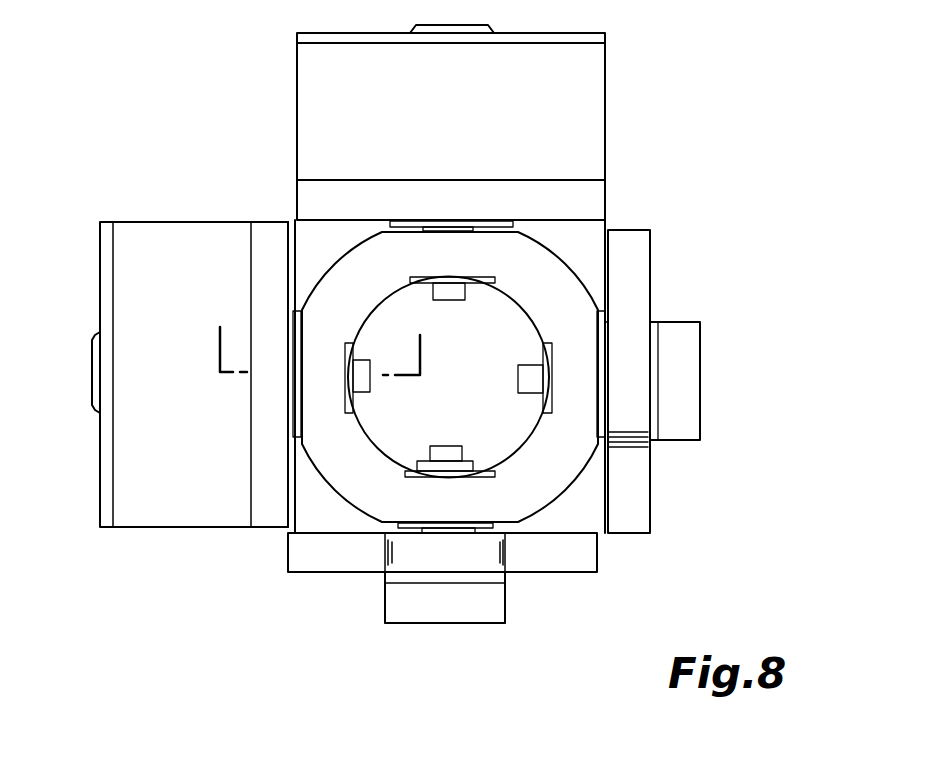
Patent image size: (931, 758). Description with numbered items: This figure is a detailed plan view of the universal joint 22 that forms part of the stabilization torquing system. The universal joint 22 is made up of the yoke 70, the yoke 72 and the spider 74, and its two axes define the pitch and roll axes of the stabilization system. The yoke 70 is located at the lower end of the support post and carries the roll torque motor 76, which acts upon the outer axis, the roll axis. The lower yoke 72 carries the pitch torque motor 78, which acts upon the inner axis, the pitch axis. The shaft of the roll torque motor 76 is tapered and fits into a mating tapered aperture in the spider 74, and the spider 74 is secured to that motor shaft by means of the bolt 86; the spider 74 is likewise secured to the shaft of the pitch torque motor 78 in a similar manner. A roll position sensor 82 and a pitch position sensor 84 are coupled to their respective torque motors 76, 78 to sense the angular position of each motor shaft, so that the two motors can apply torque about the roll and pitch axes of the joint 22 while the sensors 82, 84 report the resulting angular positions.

The universal joint 22 is at (410, 320).
The yoke 70 is at (267, 515).
The yoke 72 is at (330, 578).
The spider 74 is at (537, 495).
The roll torque motor 76 is at (159, 515).
The pitch torque motor 78 is at (305, 88).
The roll position sensor 82 is at (92, 365).
The pitch position sensor 84 is at (490, 29).
The bolt 86 is at (455, 300).